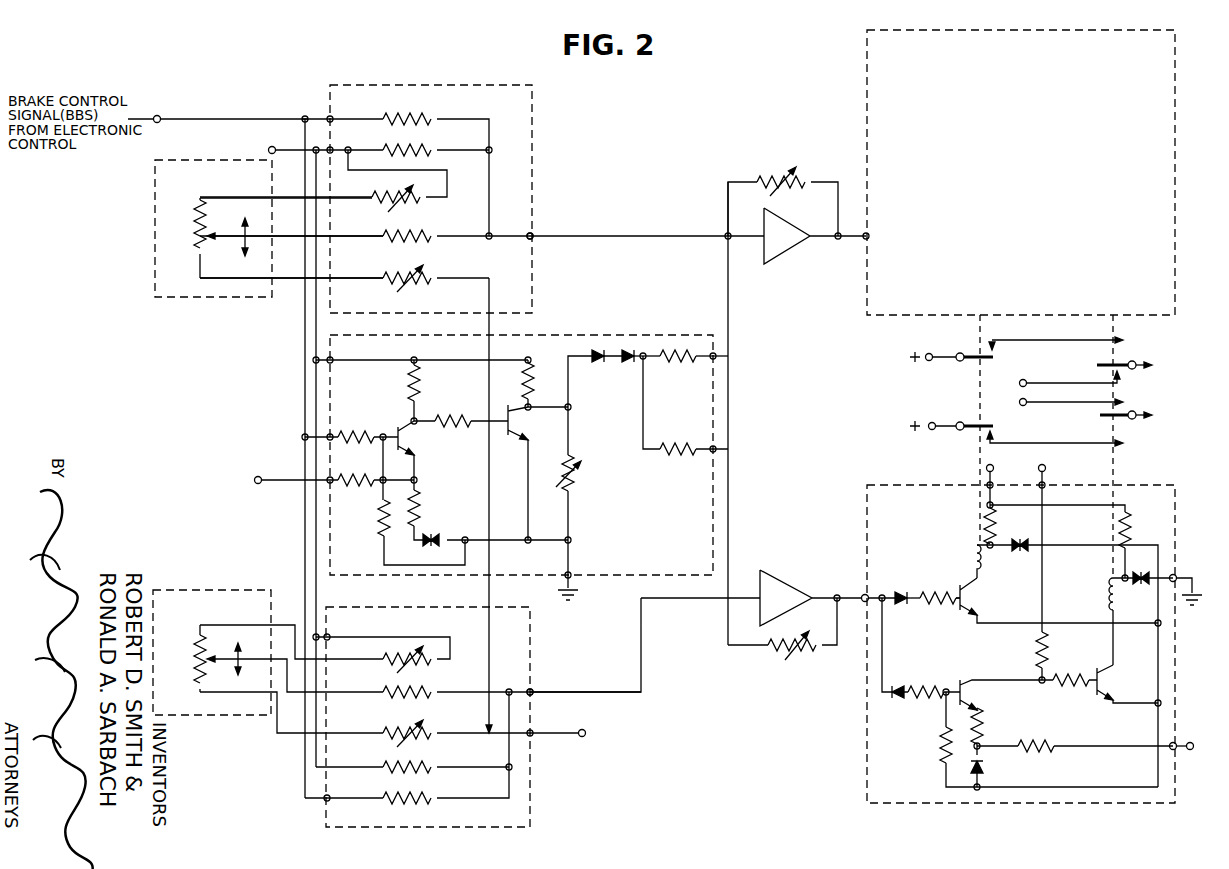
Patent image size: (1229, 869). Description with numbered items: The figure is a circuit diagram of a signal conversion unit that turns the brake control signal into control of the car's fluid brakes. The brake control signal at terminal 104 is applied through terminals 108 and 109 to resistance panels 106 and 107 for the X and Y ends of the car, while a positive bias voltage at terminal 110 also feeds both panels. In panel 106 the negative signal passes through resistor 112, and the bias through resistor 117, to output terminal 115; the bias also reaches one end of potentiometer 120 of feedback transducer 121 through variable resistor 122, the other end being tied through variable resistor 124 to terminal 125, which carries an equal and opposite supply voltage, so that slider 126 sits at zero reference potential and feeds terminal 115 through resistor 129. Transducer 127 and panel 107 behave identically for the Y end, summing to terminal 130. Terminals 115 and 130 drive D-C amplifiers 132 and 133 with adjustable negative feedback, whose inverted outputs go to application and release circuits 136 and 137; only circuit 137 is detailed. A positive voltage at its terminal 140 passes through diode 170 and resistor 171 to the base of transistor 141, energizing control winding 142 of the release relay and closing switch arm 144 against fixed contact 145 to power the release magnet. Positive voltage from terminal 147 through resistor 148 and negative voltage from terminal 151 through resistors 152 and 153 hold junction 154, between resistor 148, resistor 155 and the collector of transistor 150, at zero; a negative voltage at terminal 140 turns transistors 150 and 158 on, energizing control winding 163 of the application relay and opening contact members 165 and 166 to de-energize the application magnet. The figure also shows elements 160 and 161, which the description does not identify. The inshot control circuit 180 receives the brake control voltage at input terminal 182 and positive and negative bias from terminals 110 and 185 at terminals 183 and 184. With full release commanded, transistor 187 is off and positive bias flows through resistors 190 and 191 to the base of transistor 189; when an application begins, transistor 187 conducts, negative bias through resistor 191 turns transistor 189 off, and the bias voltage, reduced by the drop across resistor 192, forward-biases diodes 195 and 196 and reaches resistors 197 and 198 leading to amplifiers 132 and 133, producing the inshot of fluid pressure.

The terminal 104 is at (159, 114).
The resistance panel 106 is at (383, 85).
The resistance panel 107 is at (378, 607).
The terminal 108 is at (307, 115).
The terminal 109 is at (324, 799).
The terminal 110 is at (272, 147).
The resistor 112 is at (385, 122).
The output terminal 115 is at (532, 236).
The resistor 117 is at (425, 148).
The potentiometer 120 is at (185, 237).
The pressure-to-electric transducer 121 is at (155, 238).
The variable resistor 122 is at (378, 192).
The variable resistor 124 is at (431, 274).
The terminal 125 is at (586, 730).
The slider 126 is at (238, 244).
The feedback transducer 127 is at (240, 590).
The resistor 129 is at (383, 230).
The terminal 130 is at (532, 692).
The amplifier 132 is at (788, 252).
The amplifier 133 is at (765, 572).
The application and release circuit 136 is at (867, 138).
The A and R circuit 137 is at (867, 526).
The terminal 140 is at (866, 594).
The transistor 141 is at (1013, 608).
The control winding 142 is at (974, 556).
The switch arm 144 is at (973, 405).
The fixed contact 145 is at (982, 445).
The terminal 147 is at (1042, 462).
The resistor 148 is at (1050, 654).
The transistor 150 is at (1006, 710).
The terminal 151 is at (1190, 750).
The resistor 152 is at (1056, 746).
The resistor 153 is at (986, 732).
The junction 154 is at (1040, 678).
The resistor 155 is at (1058, 684).
The transistor 158 is at (1138, 694).
The B+ terminal 160 is at (984, 466).
The resistor 161 is at (1128, 522).
The control winding 163 is at (1110, 594).
The contact member 165 is at (1116, 404).
The contact member 166 is at (1102, 418).
The diode 170 is at (900, 592).
The resistor 171 is at (933, 592).
The inshot control circuit 180 is at (330, 338).
The input terminal 182 is at (336, 434).
The inshot control terminal 183 is at (316, 363).
The inshot control terminal 184 is at (334, 482).
The terminal 185 is at (259, 484).
The transistor 187 is at (446, 458).
The transistor 189 is at (556, 442).
The resistor 190 is at (413, 374).
The resistor 191 is at (476, 410).
The resistor 192 is at (528, 372).
The diode 195 is at (598, 364).
The diode 196 is at (632, 364).
The resistor 197 is at (680, 364).
The resistor 198 is at (662, 444).